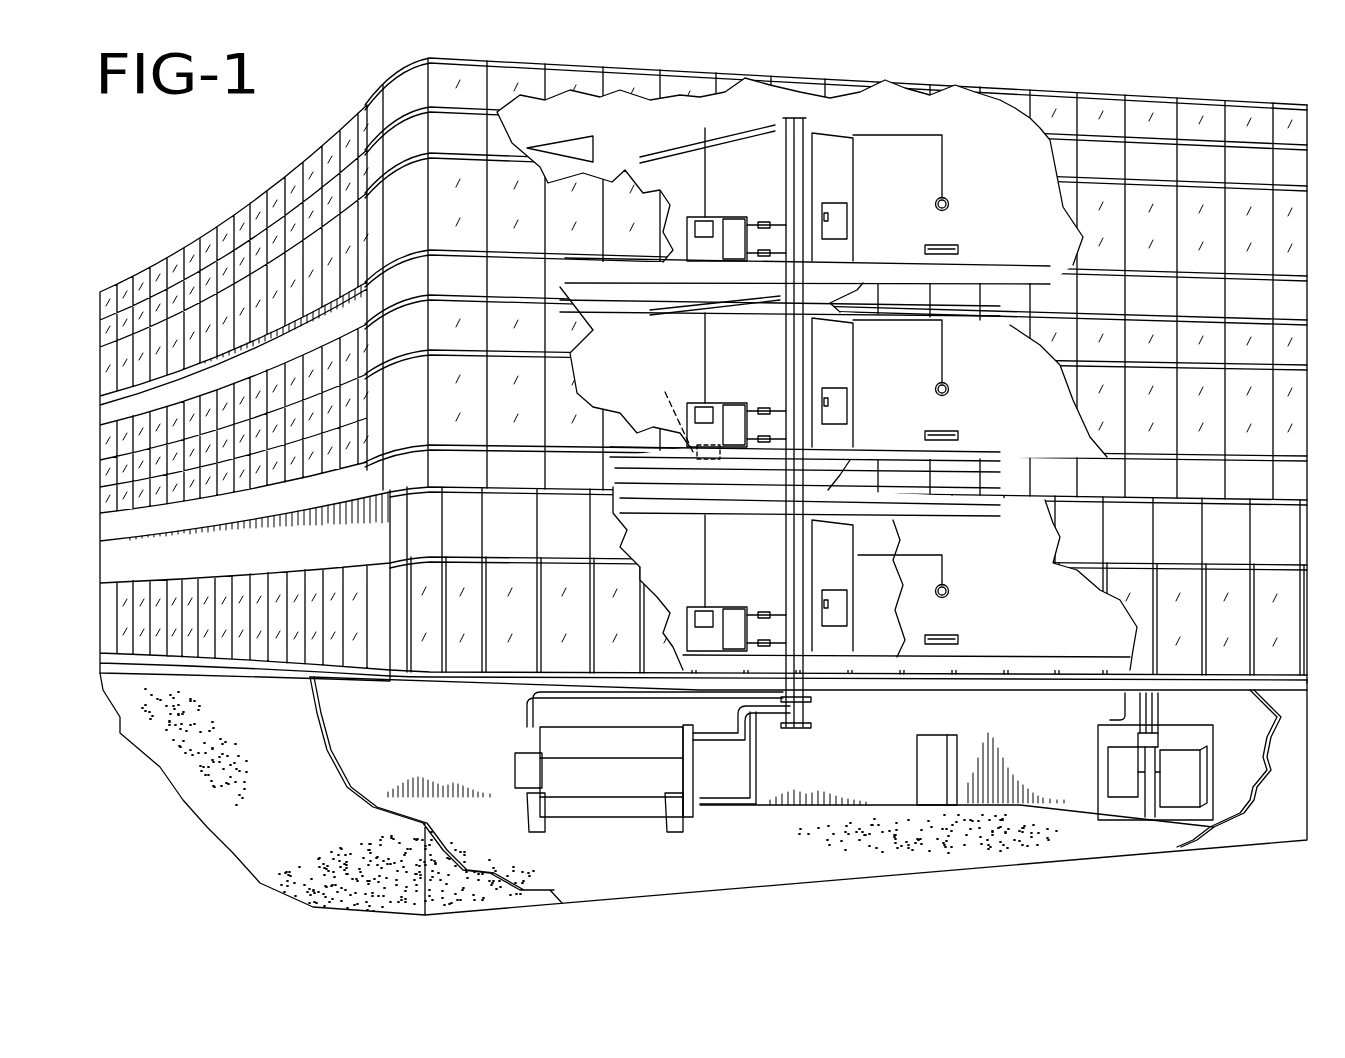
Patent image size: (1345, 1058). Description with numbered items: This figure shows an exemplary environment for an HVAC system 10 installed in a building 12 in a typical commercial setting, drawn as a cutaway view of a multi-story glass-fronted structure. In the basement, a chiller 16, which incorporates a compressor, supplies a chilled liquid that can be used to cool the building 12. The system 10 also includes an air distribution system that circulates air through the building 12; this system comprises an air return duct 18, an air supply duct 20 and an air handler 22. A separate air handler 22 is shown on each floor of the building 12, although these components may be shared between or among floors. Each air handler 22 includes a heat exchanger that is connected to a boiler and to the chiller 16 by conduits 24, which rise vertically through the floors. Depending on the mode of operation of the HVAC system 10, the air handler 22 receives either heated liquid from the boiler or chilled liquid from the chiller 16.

The HVAC system 10 is at (637, 836).
The building 12 is at (1156, 96).
The chiller 16 is at (533, 747).
The air return duct 18 is at (685, 412).
The air supply duct 20 is at (775, 126).
The air handler 22 is at (740, 394).
The conduits 24 is at (785, 662).